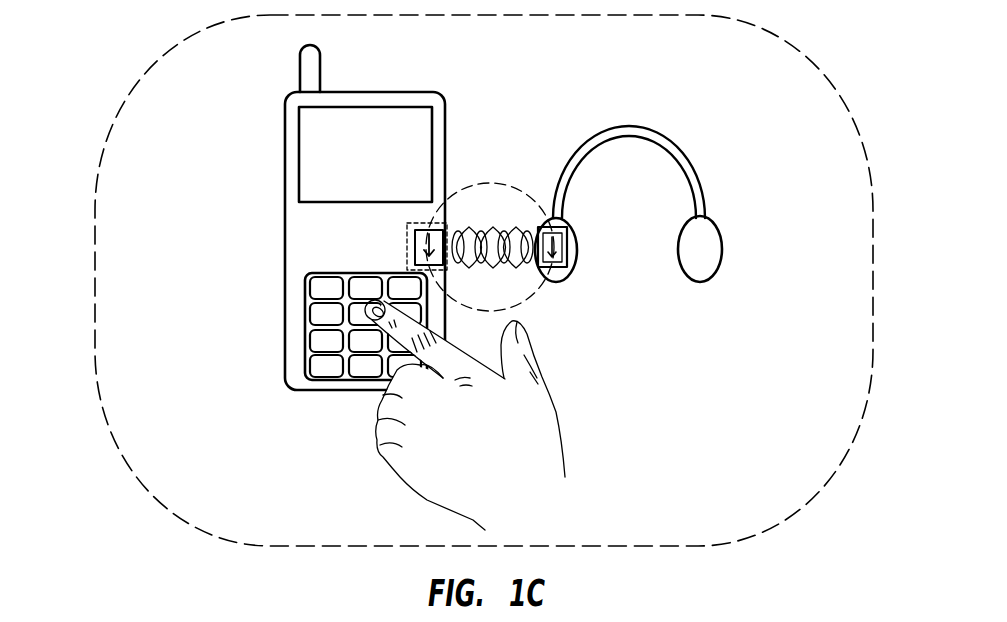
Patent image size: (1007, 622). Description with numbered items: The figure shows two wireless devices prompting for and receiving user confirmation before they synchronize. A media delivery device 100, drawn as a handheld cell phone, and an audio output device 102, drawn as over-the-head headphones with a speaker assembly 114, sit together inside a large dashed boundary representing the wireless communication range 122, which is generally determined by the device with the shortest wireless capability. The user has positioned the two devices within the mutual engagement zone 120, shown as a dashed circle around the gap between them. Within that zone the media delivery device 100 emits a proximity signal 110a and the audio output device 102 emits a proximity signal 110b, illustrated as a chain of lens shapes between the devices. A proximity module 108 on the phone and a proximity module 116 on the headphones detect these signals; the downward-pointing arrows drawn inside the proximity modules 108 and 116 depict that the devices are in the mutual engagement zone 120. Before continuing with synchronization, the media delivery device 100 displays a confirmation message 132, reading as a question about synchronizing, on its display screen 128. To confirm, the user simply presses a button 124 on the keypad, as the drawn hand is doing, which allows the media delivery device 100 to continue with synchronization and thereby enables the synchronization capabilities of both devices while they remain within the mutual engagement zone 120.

The media delivery device 100 is at (285, 240).
The audio output device 102 is at (700, 186).
The proximity module 108 is at (430, 224).
The proximity signal 110a is at (453, 264).
The proximity signal 110b is at (521, 264).
The speaker assembly 114 is at (705, 266).
The proximity module 116 is at (577, 250).
The mutual engagement zone 120 is at (514, 190).
The wireless communication range 122 is at (170, 50).
The button 124 is at (340, 308).
The display screen 128 is at (312, 179).
The confirmation message 132 is at (330, 152).